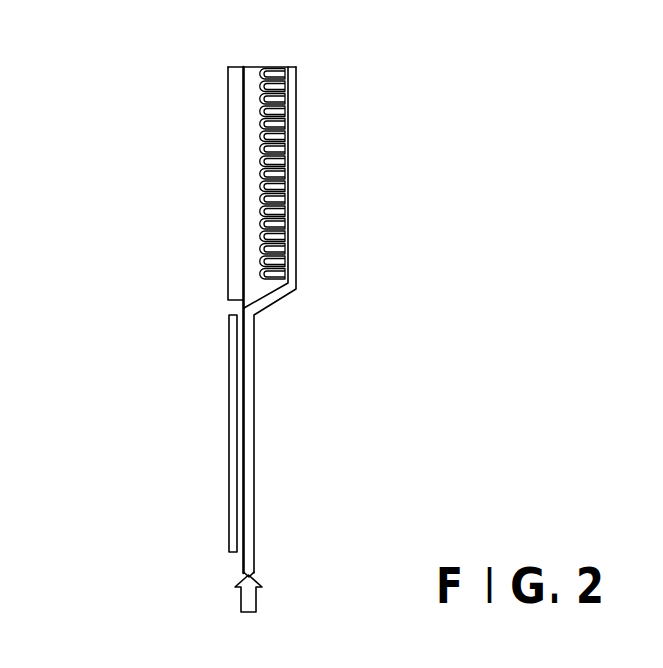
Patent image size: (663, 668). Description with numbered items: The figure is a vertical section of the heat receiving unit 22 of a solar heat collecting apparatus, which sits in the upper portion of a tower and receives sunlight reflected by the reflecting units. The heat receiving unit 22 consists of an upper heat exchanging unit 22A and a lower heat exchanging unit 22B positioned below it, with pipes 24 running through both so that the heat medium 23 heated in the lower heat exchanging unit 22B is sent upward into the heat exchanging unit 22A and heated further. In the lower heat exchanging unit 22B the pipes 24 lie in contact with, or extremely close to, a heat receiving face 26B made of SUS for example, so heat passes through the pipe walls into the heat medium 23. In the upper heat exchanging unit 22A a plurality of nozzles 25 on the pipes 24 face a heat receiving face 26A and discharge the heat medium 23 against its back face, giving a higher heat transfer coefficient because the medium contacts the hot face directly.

The heat receiving unit 22 is at (465, 147).
The heat exchanging unit 22A is at (160, 135).
The heat exchanging unit 22B is at (158, 430).
The heat medium 23 is at (248, 598).
The pipes 24 is at (295, 186).
The nozzles 25 is at (273, 72).
The heat receiving face 26A is at (235, 218).
The heat receiving face 26B is at (237, 377).